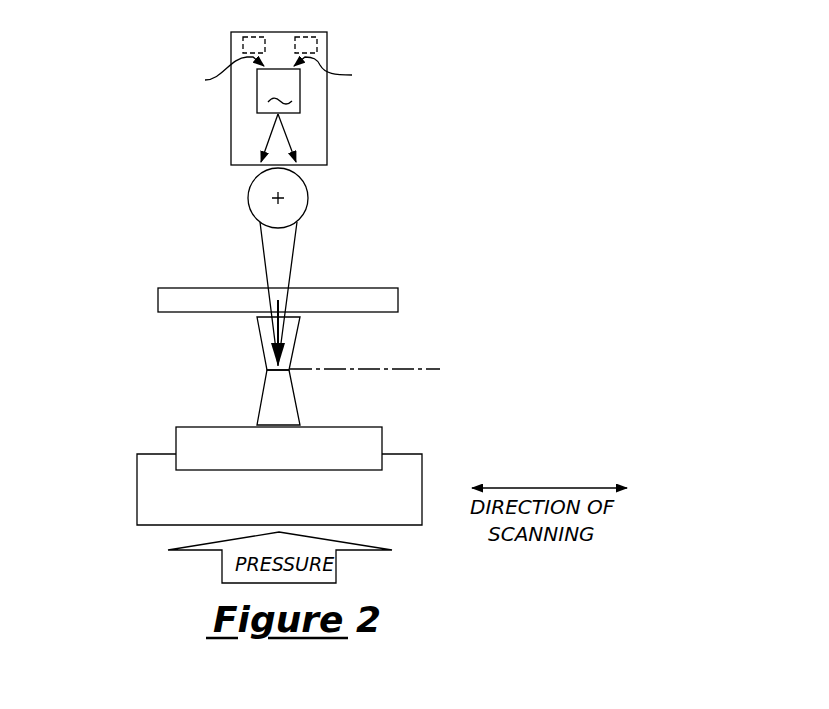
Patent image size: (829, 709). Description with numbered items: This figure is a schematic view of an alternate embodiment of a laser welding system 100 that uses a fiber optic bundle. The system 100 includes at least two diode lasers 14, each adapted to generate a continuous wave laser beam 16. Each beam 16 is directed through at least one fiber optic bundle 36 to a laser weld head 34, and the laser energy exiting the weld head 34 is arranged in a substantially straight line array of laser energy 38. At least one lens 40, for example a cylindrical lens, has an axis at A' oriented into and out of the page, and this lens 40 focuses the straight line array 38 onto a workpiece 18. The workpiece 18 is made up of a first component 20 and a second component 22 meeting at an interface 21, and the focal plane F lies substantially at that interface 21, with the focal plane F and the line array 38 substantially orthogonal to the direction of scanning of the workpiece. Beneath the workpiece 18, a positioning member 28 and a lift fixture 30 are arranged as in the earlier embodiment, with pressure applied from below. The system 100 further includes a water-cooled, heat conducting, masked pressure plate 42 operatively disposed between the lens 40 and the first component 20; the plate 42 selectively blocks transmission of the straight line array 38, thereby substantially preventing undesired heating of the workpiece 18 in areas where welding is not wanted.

The laser welding system 100 is at (436, 66).
The diode laser 14 is at (231, 36).
The continuous wave laser beam 16 is at (282, 75).
The laser weld head 34 is at (319, 171).
The fiber optic bundle 36 is at (278, 91).
The straight line array of laser energy 38 is at (291, 132).
The lens 40 is at (308, 208).
The axis of lens A' is at (229, 192).
The masked pressure plate 42 is at (398, 300).
The workpiece 18 is at (269, 323).
The first component 20 is at (261, 342).
The interface 21 is at (290, 368).
The second component 22 is at (297, 398).
The focal plane F is at (433, 369).
The positioning member 28 is at (382, 440).
The lift fixture 30 is at (137, 486).